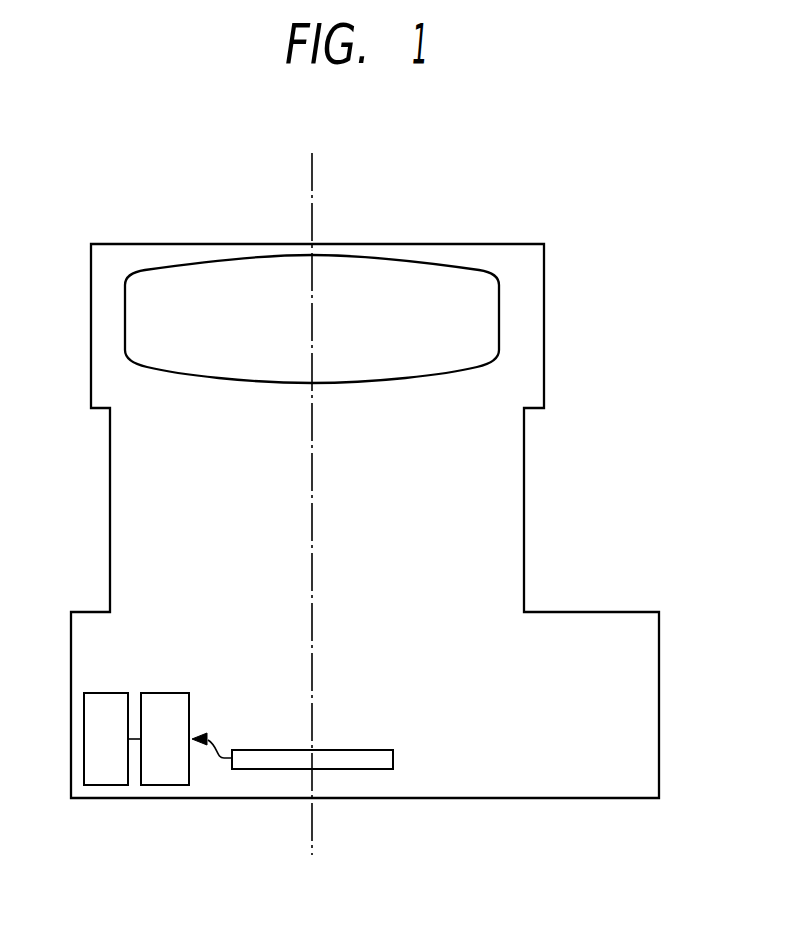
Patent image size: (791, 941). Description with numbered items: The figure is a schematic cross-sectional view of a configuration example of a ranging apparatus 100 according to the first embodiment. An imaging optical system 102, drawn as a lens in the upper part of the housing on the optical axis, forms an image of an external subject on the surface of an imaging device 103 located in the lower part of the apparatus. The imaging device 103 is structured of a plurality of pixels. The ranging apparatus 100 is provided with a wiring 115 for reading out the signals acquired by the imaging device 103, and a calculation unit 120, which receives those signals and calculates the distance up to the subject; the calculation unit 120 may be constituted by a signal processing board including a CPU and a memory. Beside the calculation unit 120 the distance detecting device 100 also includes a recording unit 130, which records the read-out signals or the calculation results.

The ranging apparatus 100 is at (472, 243).
The imaging optical system 102 is at (500, 313).
The imaging device 103 is at (393, 762).
The wiring 115 is at (218, 749).
The calculation unit 120 is at (165, 785).
The recording unit 130 is at (106, 785).